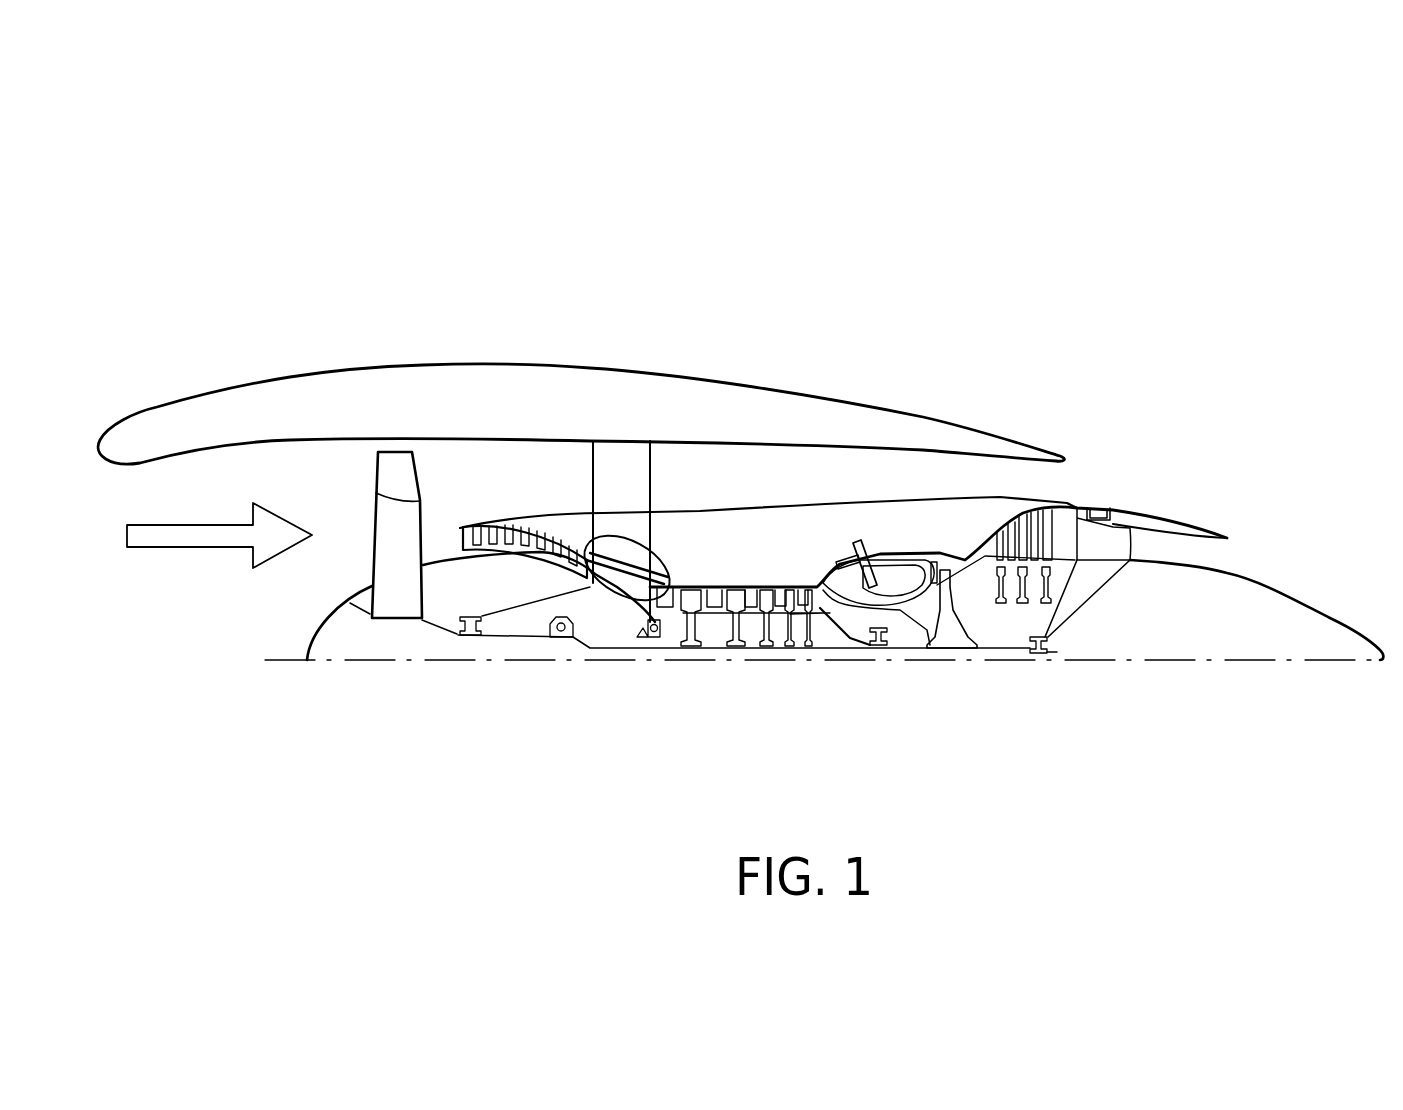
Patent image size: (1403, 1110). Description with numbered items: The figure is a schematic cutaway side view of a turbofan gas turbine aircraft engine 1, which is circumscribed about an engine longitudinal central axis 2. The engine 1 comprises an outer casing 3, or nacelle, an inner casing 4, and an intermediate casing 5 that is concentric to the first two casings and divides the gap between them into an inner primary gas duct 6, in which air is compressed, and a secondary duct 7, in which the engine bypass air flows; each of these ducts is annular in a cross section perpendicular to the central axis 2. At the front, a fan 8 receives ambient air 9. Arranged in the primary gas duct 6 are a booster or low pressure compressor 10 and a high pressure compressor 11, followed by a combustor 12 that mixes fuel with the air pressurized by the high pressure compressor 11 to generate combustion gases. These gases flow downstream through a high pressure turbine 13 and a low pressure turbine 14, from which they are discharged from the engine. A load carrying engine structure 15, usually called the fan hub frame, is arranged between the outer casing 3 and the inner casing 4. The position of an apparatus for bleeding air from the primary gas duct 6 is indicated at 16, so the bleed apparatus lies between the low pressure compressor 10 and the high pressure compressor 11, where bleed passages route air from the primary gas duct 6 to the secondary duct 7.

The turbofan gas turbine aircraft engine 1 is at (1122, 256).
The engine longitudinal central axis 2 is at (1247, 662).
The outer casing 3 is at (207, 403).
The inner casing 4 is at (600, 632).
The intermediate casing 5 is at (807, 523).
The primary gas duct 6 is at (437, 517).
The secondary duct 7 is at (527, 463).
The fan 8 is at (393, 460).
The ambient air 9 is at (172, 542).
The low pressure compressor 10 is at (472, 585).
The high pressure compressor 11 is at (773, 687).
The combustor 12 is at (903, 587).
The high pressure turbine 13 is at (967, 690).
The low pressure turbine 14 is at (1057, 622).
The load carrying engine structure 15 is at (640, 418).
The bleed apparatus position 16 is at (645, 543).